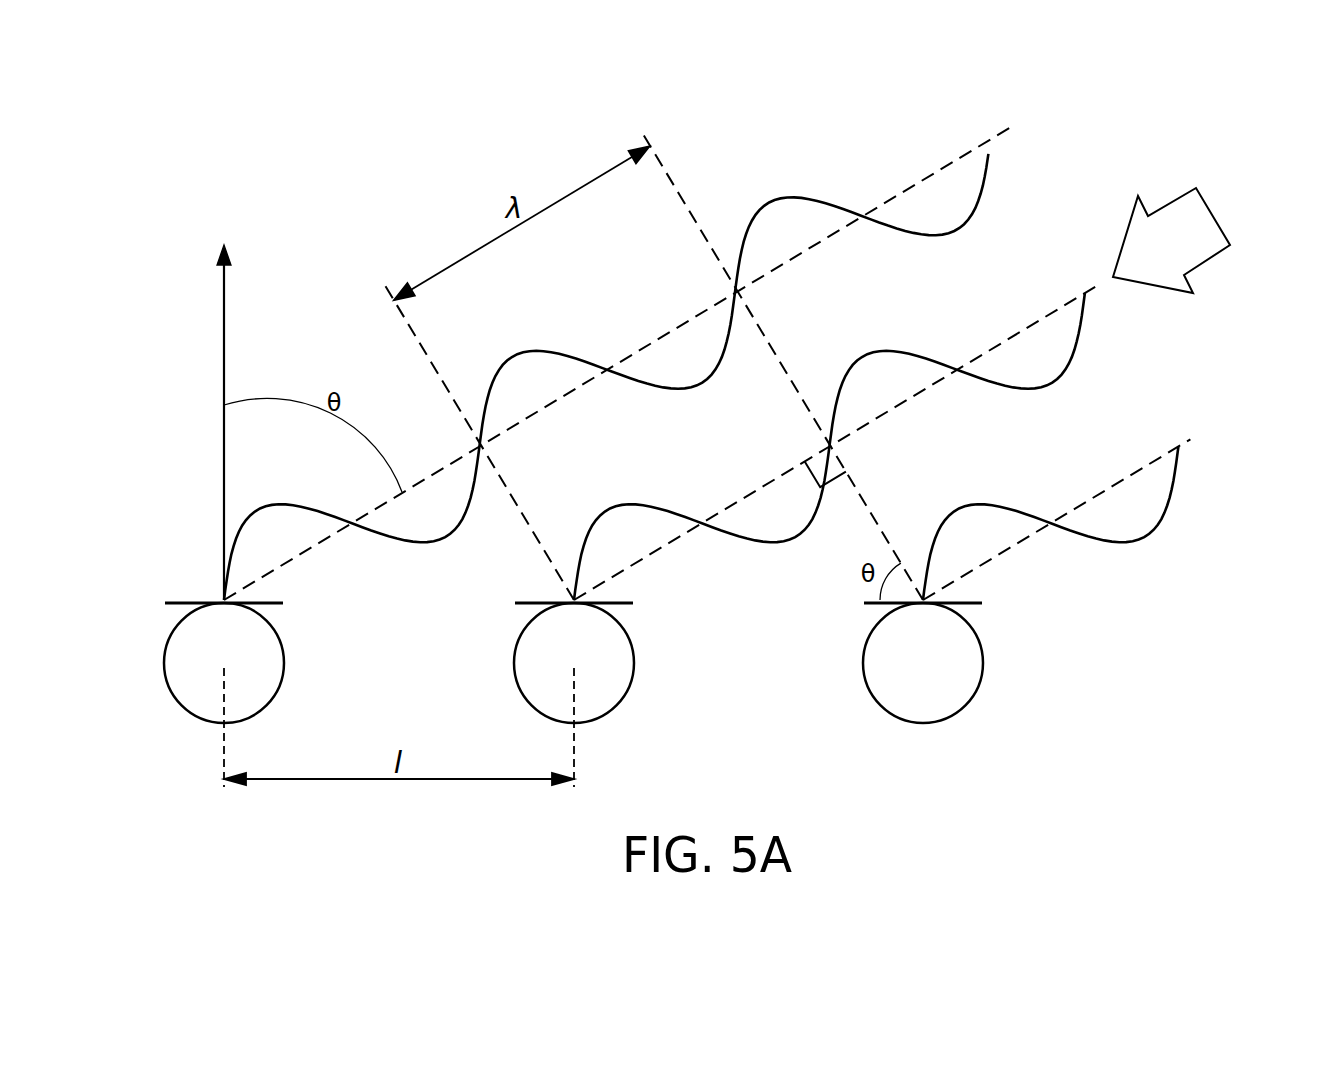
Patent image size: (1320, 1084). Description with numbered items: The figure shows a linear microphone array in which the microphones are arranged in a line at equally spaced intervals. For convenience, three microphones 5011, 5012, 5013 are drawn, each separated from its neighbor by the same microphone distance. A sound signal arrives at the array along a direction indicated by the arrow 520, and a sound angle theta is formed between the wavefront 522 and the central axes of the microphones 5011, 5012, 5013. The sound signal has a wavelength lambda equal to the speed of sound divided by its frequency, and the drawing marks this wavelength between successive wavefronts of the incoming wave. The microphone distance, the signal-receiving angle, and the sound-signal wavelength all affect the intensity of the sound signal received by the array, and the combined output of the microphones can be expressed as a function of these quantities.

The incident acoustic/optical wave direction 520 is at (1207, 258).
The wavefront 522 is at (218, 290).
The microphone 5011 is at (284, 663).
The microphone 5012 is at (634, 663).
The microphone 5013 is at (983, 663).